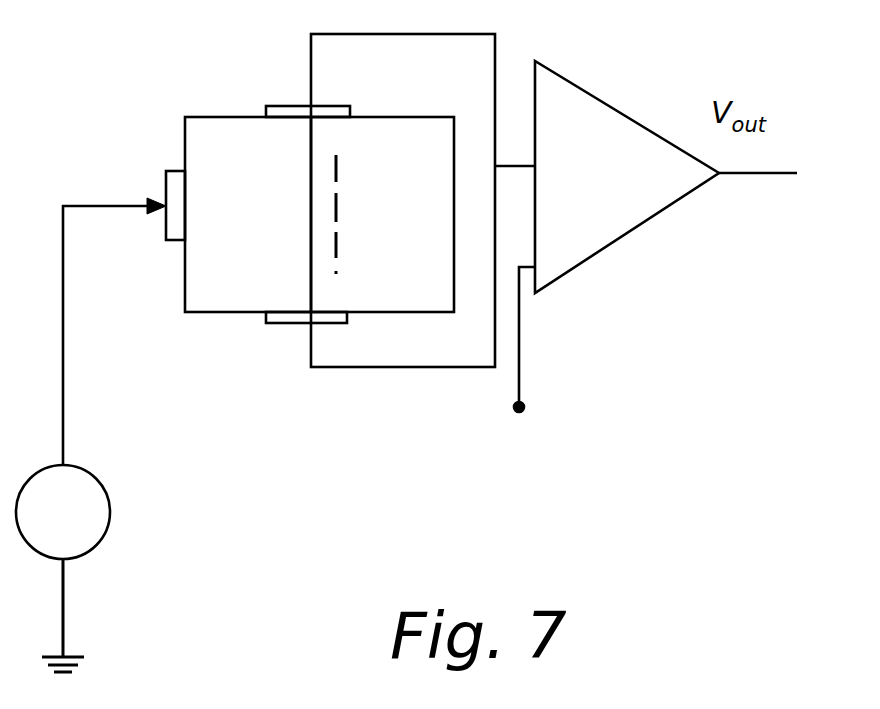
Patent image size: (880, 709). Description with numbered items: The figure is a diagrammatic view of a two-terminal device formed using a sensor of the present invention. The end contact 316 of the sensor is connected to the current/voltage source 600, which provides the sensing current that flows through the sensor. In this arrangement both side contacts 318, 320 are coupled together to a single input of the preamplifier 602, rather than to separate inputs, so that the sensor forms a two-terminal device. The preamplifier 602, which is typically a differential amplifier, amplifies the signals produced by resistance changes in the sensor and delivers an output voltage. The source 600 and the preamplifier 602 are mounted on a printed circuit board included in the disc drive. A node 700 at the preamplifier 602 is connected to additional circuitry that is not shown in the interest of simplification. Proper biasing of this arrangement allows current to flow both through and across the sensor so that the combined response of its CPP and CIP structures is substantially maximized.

The end contact 316 is at (175, 222).
The side contact 318 is at (331, 111).
The side contact 320 is at (293, 318).
The current/voltage source 600 is at (97, 526).
The preamplifier 602 is at (611, 189).
The node 700 is at (524, 408).